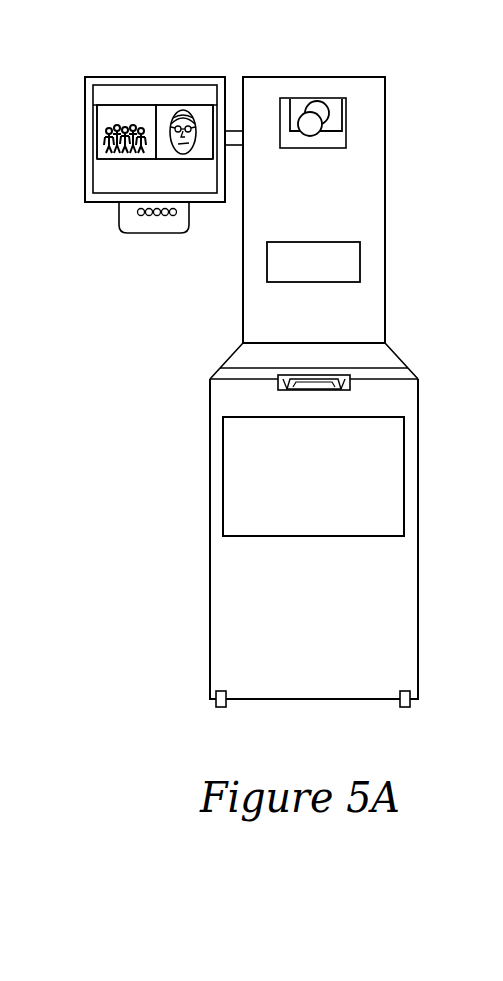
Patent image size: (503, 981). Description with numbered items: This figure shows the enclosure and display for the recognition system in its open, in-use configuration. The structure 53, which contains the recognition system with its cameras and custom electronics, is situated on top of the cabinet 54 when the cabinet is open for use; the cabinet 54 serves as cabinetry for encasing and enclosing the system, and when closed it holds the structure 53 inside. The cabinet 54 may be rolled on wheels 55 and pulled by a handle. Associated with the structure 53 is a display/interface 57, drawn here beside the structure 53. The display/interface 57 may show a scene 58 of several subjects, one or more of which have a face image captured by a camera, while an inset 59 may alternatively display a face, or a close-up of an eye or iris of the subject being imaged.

The structure 53 is at (376, 168).
The cabinet 54 is at (218, 477).
The wheels 55 is at (214, 703).
The display/interface 57 is at (150, 77).
The scene 58 is at (110, 118).
The inset 59 is at (168, 153).